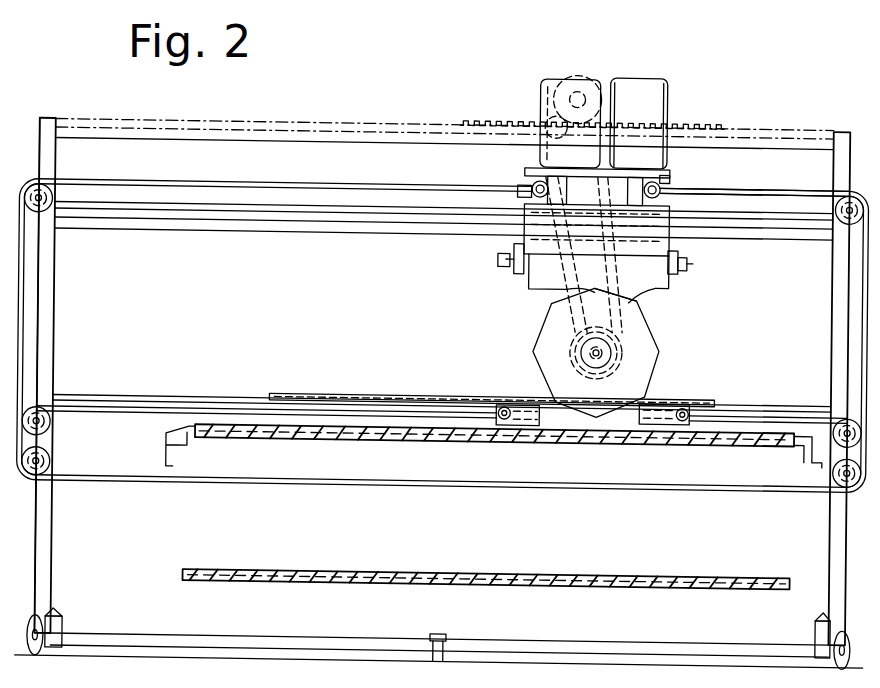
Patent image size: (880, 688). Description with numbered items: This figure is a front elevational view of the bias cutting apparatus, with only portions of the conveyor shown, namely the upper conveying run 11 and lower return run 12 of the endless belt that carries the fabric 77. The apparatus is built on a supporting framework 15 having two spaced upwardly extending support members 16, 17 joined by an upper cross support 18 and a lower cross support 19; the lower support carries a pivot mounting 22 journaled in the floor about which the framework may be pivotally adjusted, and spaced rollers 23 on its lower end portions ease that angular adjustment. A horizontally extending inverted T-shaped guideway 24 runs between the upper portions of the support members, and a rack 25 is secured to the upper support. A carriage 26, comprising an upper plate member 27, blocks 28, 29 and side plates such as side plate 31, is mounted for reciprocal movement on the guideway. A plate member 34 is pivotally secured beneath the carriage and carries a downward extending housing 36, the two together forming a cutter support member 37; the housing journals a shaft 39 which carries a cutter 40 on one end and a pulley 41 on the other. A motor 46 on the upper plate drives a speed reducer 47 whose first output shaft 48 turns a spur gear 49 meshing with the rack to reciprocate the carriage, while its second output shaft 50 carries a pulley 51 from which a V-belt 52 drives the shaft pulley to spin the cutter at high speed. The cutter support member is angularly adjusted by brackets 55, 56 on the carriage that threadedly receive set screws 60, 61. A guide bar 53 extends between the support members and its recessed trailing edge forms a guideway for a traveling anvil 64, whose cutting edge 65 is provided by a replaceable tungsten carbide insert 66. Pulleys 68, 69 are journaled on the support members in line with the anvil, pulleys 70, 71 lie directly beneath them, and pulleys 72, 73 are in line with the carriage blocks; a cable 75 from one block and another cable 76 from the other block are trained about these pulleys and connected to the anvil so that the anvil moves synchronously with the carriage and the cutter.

The upper conveying run 11 is at (214, 428).
The lower return run 12 is at (490, 574).
The supporting framework 15 is at (78, 325).
The support member 16 is at (46, 287).
The support member 17 is at (834, 327).
The upper cross support 18 is at (186, 136).
The lower cross support 19 is at (240, 646).
The pivot mounting 22 is at (447, 632).
The rollers 23 is at (58, 612).
The guideway 24 is at (275, 229).
The rack 25 is at (487, 124).
The carriage 26 is at (496, 293).
The upper plate member 27 is at (662, 183).
The block 28 is at (541, 182).
The block 29 is at (633, 190).
The side plate 31 is at (665, 237).
The plate member 34 is at (648, 306).
The housing 36 is at (574, 326).
The cutter support member 37 is at (640, 302).
The shaft 39 is at (593, 354).
The cutter 40 is at (662, 369).
The pulley 41 is at (560, 304).
The motor 46 is at (652, 100).
The speed reducer 47 is at (554, 80).
The first output shaft 48 is at (586, 92).
The spur gear 49 is at (577, 80).
The second output shaft 50 is at (560, 108).
The pulley 51 is at (556, 82).
The V-belt 52 is at (522, 197).
The guide bar 53 is at (223, 400).
The bracket 55 is at (502, 256).
The bracket 56 is at (688, 262).
The set screw 60 is at (498, 262).
The set screw 61 is at (680, 268).
The anvil 64 is at (662, 422).
The cutting edge 65 is at (562, 386).
The tungsten carbide insert 66 is at (558, 408).
The pulley 68 is at (50, 429).
The pulley 69 is at (840, 420).
The pulley 70 is at (50, 462).
The pulley 71 is at (834, 471).
The pulley 72 is at (50, 200).
The pulley 73 is at (840, 206).
The cable 75 is at (271, 186).
The cable 76 is at (749, 196).
The fabric 77 is at (386, 396).